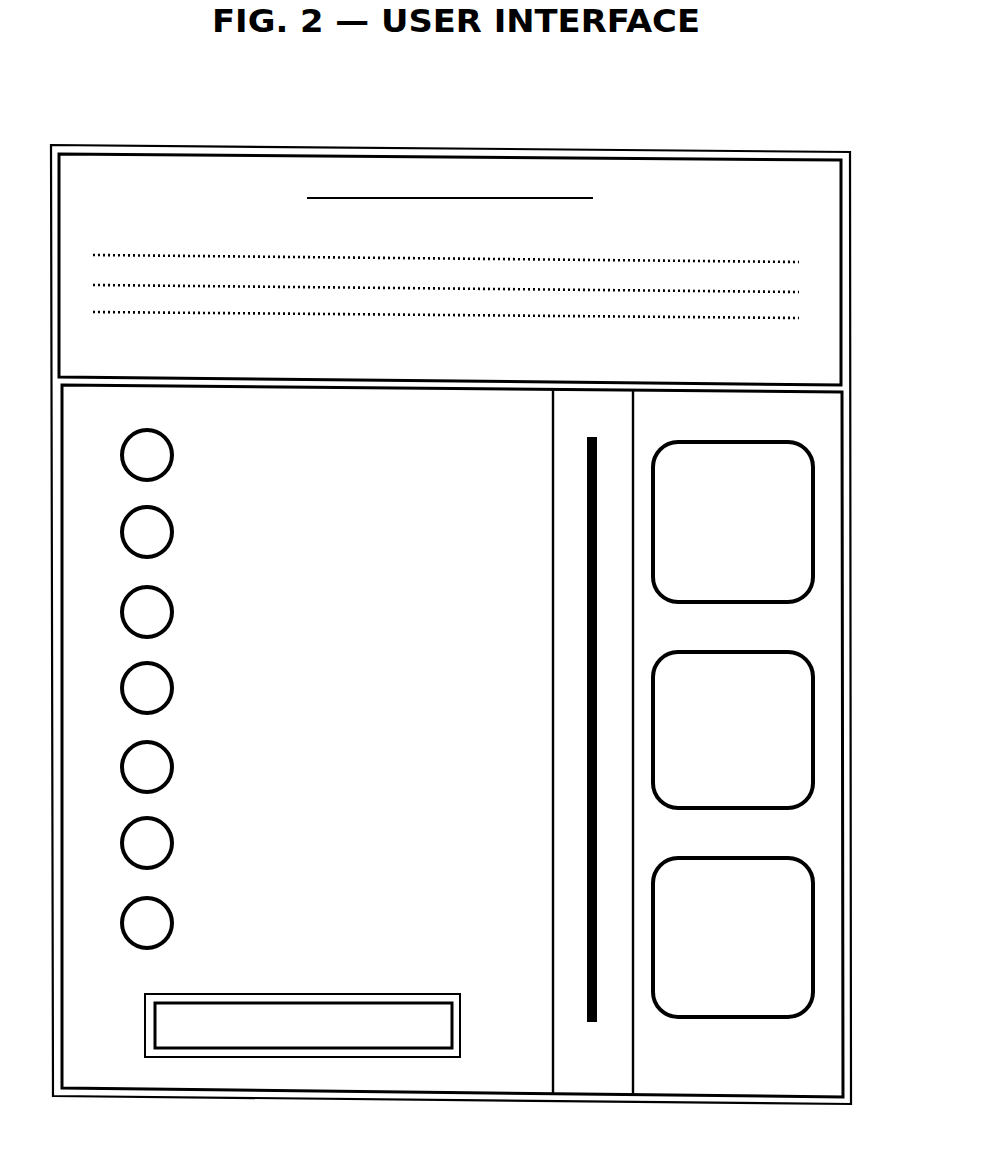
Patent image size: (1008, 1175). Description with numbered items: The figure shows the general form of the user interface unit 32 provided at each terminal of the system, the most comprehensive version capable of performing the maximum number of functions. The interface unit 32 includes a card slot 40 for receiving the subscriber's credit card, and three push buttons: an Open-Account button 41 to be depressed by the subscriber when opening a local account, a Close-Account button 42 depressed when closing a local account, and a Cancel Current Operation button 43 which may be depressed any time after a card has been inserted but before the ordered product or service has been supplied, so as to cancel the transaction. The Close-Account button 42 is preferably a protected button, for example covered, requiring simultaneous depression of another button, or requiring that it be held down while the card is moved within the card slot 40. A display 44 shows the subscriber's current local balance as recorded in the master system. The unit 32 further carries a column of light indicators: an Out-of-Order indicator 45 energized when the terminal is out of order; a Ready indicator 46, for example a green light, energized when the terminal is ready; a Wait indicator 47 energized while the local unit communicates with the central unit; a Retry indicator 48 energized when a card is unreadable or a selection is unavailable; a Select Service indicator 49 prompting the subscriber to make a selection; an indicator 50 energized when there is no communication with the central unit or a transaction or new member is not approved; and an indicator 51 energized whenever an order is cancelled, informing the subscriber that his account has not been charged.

The user interface unit 32 is at (403, 145).
The card slot 40 is at (587, 522).
The Open-Account button 41 is at (813, 513).
The Close-Account button 42 is at (813, 717).
The Cancel Current Operation button 43 is at (813, 933).
The display 44 is at (228, 1049).
The Out-of-Order indicator 45 is at (125, 430).
The Ready indicator 46 is at (125, 510).
The Wait indicator 47 is at (125, 590).
The Retry indicator 48 is at (125, 668).
The Select Service indicator 49 is at (125, 747).
The no-communication indicator 50 is at (125, 825).
The order-cancelled indicator 51 is at (125, 905).